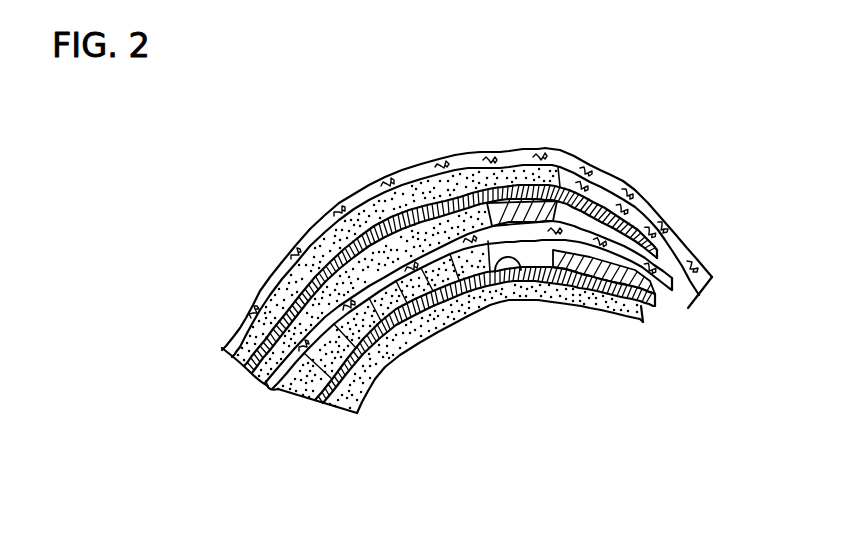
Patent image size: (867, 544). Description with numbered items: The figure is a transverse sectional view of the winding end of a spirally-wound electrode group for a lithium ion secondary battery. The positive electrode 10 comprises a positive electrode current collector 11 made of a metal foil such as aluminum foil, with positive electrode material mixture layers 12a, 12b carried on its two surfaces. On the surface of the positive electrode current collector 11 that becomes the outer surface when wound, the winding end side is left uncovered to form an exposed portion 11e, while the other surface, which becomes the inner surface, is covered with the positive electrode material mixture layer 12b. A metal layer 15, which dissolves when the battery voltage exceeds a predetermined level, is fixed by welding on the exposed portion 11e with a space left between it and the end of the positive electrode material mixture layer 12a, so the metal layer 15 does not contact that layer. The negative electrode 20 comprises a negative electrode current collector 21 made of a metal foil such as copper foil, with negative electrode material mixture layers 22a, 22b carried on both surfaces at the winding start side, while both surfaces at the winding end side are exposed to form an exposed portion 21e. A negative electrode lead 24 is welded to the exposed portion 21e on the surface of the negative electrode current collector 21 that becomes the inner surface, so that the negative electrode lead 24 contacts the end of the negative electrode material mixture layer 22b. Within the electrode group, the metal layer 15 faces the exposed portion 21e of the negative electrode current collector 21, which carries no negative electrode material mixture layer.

The positive electrode 10 is at (317, 437).
The positive electrode current collector 11 is at (443, 310).
The exposed portion of the positive electrode current collector 11e is at (510, 282).
The positive electrode material mixture layer 12a is at (377, 370).
The positive electrode material mixture layer 12b is at (587, 300).
The metal layer 15 is at (600, 268).
The negative electrode 20 is at (215, 362).
The negative electrode current collector 21 is at (418, 205).
The exposed portion of the negative electrode current collector 21e is at (594, 206).
The negative electrode material mixture layer 22a is at (343, 237).
The negative electrode material mixture layer 22b is at (312, 305).
The negative electrode lead 24 is at (520, 201).